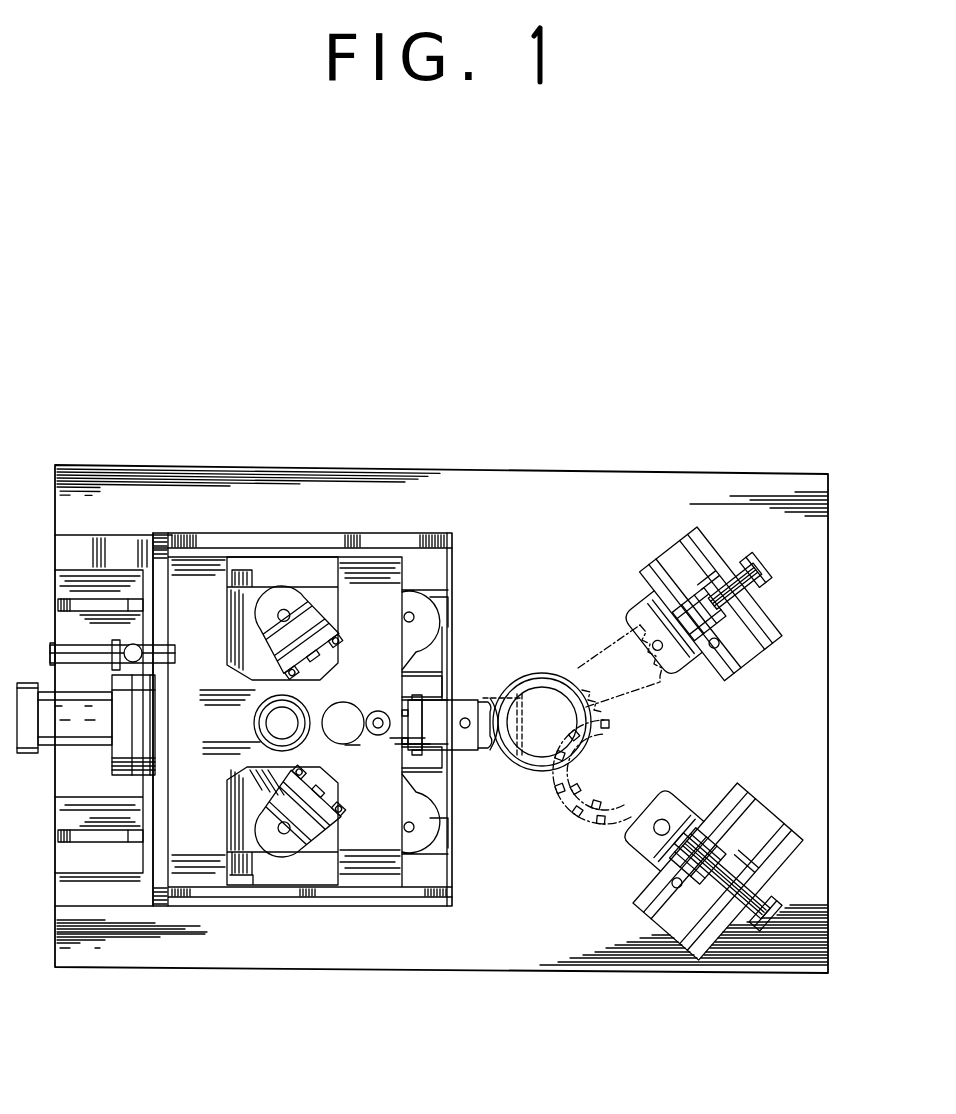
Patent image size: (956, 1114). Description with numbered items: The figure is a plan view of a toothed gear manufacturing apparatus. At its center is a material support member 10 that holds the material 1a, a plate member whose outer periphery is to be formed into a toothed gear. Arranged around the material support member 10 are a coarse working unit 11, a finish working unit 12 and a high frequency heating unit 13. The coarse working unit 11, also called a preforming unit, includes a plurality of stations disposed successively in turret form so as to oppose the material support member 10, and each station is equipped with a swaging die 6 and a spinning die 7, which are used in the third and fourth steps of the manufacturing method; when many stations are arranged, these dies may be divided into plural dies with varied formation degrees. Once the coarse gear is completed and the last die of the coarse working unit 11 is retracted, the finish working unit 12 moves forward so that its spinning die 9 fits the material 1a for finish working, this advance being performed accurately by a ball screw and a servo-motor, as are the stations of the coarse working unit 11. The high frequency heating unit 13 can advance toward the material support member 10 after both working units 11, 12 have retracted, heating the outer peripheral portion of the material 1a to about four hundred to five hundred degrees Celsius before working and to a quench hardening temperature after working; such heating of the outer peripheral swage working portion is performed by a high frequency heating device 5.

The material 1a is at (517, 768).
The high frequency heating device 5 is at (600, 820).
The swaging die 6 is at (482, 748).
The spinning die 7 is at (428, 598).
The spinning die 9 is at (574, 660).
The material support member 10 is at (528, 705).
The coarse working unit 11 is at (425, 527).
The finish working unit 12 is at (766, 598).
The high frequency heating unit 13 is at (718, 788).